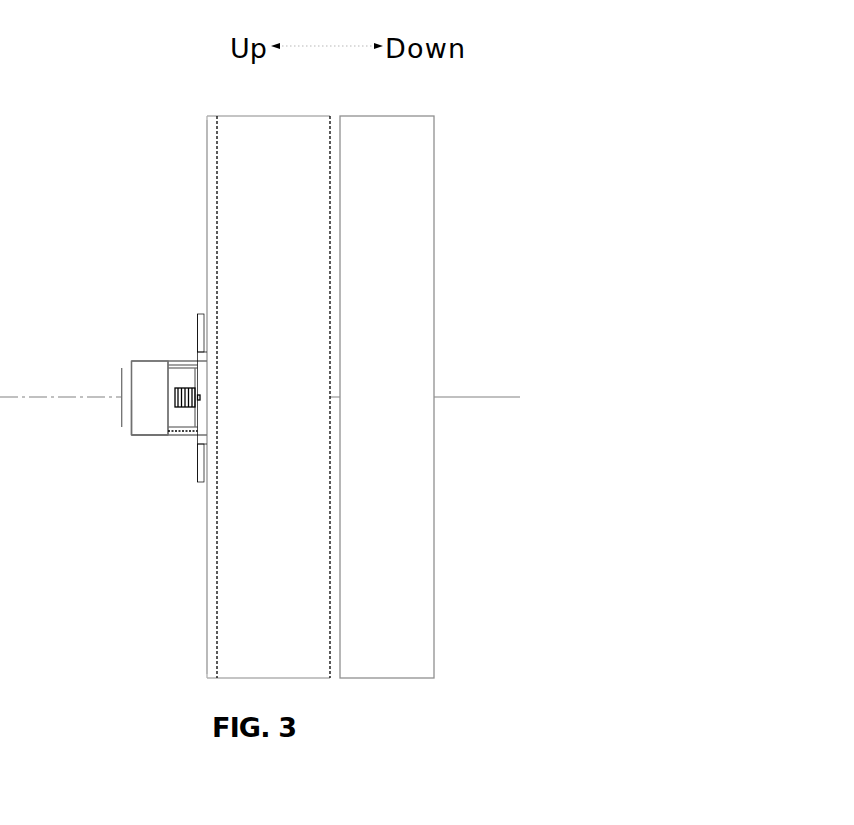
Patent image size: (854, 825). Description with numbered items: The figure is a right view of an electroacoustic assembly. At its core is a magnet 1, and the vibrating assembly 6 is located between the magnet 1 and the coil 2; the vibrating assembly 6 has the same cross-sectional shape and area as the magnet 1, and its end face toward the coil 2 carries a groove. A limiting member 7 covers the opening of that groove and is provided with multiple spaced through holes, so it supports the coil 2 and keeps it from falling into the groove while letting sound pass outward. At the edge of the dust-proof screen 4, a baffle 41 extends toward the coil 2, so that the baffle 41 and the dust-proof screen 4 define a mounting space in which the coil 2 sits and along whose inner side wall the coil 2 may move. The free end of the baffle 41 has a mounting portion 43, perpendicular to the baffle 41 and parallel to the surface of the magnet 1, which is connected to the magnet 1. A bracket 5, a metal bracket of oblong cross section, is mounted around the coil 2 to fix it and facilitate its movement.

The magnet 1 is at (408, 227).
The vibrating assembly 6 is at (300, 552).
The limiting member 7 is at (205, 638).
The coil 2 is at (158, 343).
The dust-proof screen 4 is at (123, 361).
The baffle 41 is at (135, 436).
The bracket 5 is at (173, 440).
The mounting portion 43 is at (197, 312).